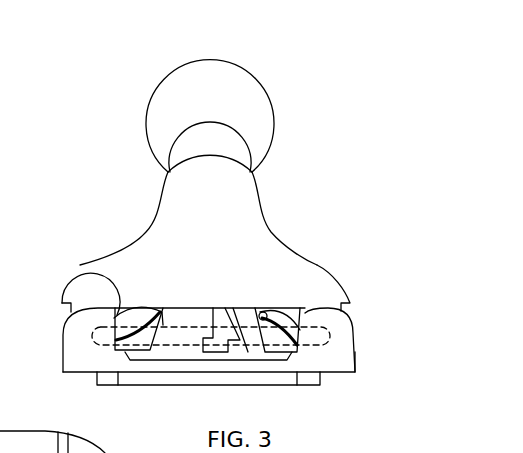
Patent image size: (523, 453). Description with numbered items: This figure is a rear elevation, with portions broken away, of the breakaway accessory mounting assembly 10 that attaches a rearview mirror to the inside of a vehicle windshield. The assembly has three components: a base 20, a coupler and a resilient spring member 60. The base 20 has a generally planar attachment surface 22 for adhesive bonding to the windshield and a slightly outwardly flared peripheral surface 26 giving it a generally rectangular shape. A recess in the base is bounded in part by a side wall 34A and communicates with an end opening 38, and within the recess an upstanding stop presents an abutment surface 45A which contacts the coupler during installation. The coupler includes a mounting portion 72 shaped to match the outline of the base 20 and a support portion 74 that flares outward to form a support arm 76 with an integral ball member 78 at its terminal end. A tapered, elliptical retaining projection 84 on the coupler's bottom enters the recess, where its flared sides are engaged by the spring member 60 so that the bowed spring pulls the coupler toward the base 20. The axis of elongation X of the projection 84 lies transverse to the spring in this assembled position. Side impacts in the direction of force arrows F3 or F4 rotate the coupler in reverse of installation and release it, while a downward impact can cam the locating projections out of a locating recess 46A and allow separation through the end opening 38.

The breakaway accessory mounting assembly 10 is at (292, 191).
The base 20 is at (60, 337).
The attachment surface 22 is at (282, 387).
The peripheral surface 26 is at (356, 352).
The end opening 38 is at (115, 316).
The abutment surface 45A is at (217, 352).
The resilient spring member 60 is at (294, 313).
The mounting portion 72 is at (258, 299).
The support portion 74 is at (215, 215).
The support arm 76 is at (183, 150).
The ball member 78 is at (252, 100).
The retaining projection 84 is at (197, 337).
The axis of elongation X is at (207, 53).
The force arrow F3 is at (140, 125).
The force arrow F4 is at (340, 125).
The side wall 34A is at (17, 452).
The locating recess 46A is at (96, 427).